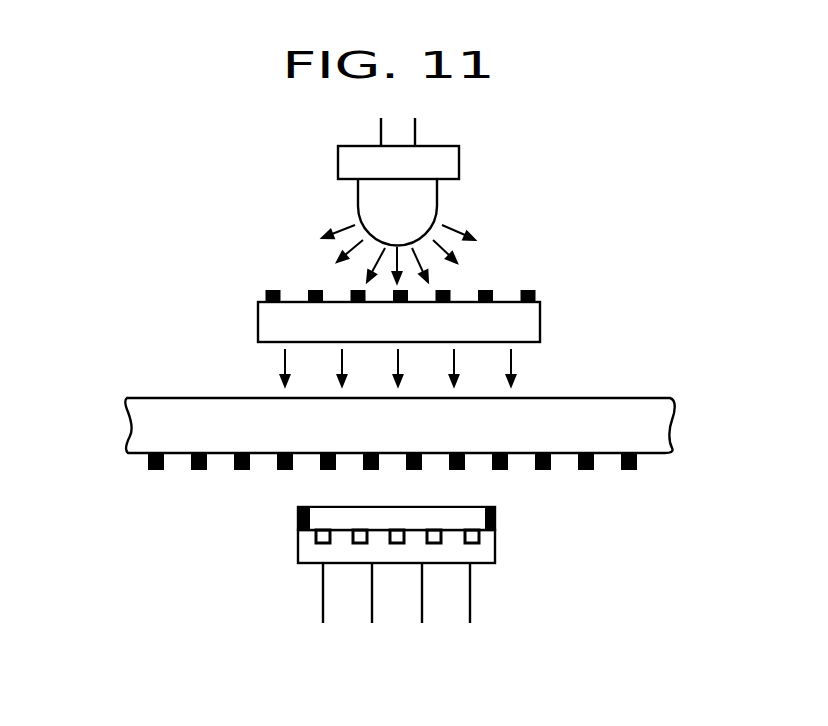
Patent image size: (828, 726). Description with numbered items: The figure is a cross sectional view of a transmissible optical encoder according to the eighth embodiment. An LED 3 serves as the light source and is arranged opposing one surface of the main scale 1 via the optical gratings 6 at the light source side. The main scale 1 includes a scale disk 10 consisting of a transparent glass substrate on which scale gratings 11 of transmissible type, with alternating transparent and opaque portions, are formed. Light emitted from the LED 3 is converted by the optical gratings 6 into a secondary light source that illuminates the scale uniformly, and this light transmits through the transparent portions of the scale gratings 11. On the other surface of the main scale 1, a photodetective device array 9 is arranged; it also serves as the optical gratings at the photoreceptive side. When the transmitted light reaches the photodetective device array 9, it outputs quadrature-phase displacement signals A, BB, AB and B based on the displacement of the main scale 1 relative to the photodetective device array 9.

The main scale 1 is at (370, 442).
The LED 3 is at (374, 203).
The optical gratings at the light source side 6 is at (533, 293).
The photodetective device array 9 is at (496, 535).
The scale disk 10 is at (145, 428).
The scale gratings 11 is at (634, 470).